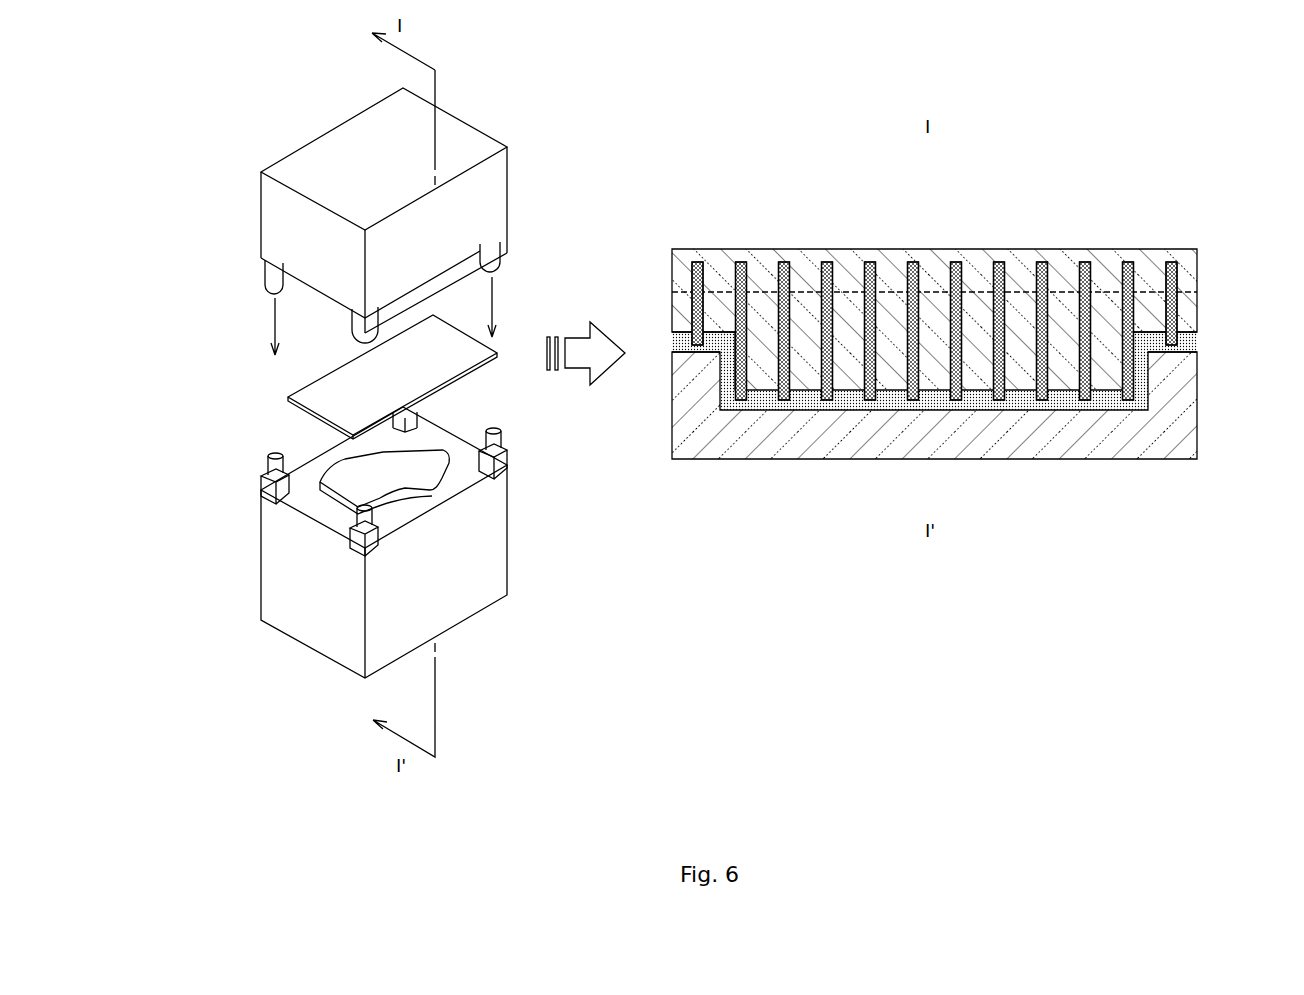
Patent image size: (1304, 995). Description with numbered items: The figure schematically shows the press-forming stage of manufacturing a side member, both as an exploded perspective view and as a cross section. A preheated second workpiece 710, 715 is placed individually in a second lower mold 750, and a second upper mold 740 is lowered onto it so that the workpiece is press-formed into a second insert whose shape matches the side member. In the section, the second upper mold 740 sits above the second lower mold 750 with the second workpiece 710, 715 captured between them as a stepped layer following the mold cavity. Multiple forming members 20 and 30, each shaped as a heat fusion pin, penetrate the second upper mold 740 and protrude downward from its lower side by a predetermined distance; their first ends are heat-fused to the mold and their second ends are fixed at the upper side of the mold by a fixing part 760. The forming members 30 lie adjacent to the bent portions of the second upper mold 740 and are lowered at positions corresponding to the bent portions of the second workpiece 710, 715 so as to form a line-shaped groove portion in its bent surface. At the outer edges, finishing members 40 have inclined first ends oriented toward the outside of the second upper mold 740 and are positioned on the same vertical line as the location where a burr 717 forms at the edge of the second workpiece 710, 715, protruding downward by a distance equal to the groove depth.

The forming member 20 is at (784, 261).
The forming member 30 is at (741, 262).
The finishing member 40 is at (695, 262).
The second workpiece 710 is at (325, 387).
The second workpiece 715 is at (688, 347).
The burr 717 is at (672, 338).
The second upper mold 740 is at (370, 145).
The second lower mold 750 is at (320, 535).
The fixing part 760 is at (763, 250).